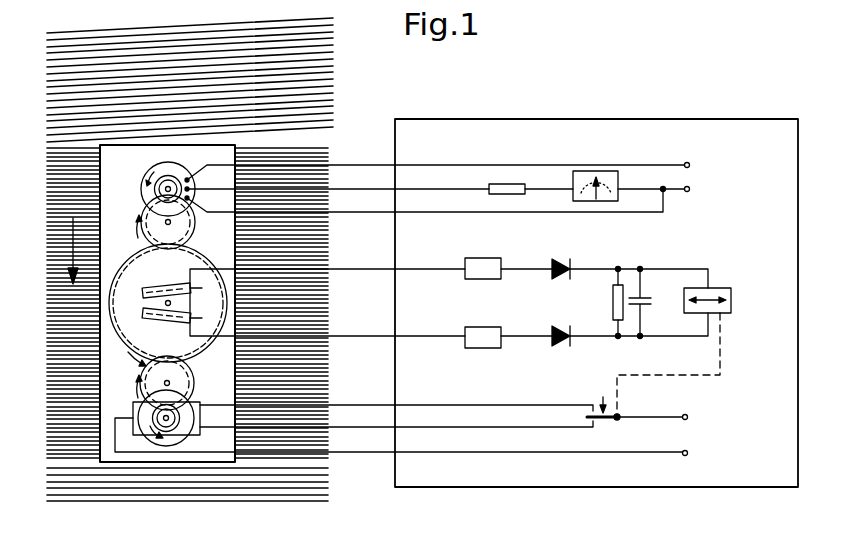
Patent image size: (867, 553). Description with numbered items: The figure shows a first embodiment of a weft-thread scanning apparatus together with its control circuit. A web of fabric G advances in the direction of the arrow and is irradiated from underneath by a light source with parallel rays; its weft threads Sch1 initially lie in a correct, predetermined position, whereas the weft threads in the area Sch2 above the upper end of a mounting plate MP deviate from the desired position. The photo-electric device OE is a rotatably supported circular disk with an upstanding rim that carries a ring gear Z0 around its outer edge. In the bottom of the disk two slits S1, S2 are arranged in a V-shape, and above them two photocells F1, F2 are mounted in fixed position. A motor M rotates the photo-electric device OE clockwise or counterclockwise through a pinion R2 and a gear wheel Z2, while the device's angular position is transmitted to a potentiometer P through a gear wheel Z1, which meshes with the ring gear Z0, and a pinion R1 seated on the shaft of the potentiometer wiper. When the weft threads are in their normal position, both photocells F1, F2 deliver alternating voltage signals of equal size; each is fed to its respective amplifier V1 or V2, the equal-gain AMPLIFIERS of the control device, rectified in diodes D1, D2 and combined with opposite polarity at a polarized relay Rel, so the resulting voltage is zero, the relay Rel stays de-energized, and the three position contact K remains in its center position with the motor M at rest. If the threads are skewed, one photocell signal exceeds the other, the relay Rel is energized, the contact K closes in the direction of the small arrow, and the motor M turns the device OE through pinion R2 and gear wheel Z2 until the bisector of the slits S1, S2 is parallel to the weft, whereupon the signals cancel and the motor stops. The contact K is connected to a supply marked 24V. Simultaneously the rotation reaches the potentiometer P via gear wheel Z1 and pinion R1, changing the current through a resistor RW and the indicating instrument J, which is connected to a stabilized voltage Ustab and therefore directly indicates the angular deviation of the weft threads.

The weft threads Sch2 is at (77, 86).
The weft threads Sch1 is at (71, 338).
The web of fabric G is at (72, 229).
The potentiometer P is at (150, 172).
The mounting plate MP is at (436, 179).
The pinion R1 is at (160, 190).
The gear wheel Z1 is at (185, 227).
The ring gear Z0 is at (136, 260).
The slit S1 is at (144, 299).
The photocell F1 is at (170, 286).
The slit S2 is at (146, 311).
The photocell F2 is at (167, 320).
The photo-electric device OE is at (200, 343).
The gear wheel Z2 is at (185, 383).
The pinion R2 is at (157, 416).
The motor M is at (180, 428).
The resistor RW is at (505, 184).
The indicating instrument J is at (612, 172).
The stabilized voltage Ustab is at (718, 177).
The amplifier V1 is at (485, 262).
The amplifier V2 is at (485, 329).
The amplifiers AMPLIFIERS is at (501, 327).
The diode D1 is at (604, 260).
The diode D2 is at (604, 323).
The polarized relay Rel is at (692, 352).
The three position contact K is at (629, 397).
The 24 V AC supply terminals 24V is at (714, 435).